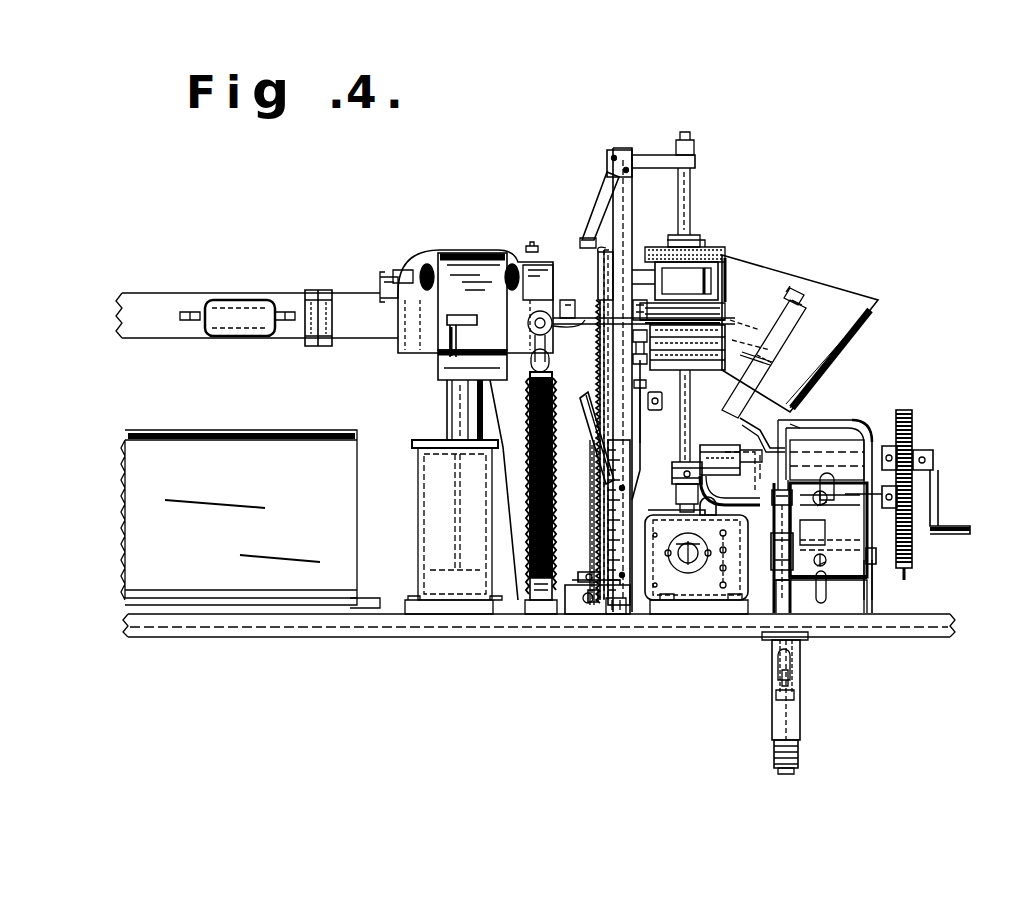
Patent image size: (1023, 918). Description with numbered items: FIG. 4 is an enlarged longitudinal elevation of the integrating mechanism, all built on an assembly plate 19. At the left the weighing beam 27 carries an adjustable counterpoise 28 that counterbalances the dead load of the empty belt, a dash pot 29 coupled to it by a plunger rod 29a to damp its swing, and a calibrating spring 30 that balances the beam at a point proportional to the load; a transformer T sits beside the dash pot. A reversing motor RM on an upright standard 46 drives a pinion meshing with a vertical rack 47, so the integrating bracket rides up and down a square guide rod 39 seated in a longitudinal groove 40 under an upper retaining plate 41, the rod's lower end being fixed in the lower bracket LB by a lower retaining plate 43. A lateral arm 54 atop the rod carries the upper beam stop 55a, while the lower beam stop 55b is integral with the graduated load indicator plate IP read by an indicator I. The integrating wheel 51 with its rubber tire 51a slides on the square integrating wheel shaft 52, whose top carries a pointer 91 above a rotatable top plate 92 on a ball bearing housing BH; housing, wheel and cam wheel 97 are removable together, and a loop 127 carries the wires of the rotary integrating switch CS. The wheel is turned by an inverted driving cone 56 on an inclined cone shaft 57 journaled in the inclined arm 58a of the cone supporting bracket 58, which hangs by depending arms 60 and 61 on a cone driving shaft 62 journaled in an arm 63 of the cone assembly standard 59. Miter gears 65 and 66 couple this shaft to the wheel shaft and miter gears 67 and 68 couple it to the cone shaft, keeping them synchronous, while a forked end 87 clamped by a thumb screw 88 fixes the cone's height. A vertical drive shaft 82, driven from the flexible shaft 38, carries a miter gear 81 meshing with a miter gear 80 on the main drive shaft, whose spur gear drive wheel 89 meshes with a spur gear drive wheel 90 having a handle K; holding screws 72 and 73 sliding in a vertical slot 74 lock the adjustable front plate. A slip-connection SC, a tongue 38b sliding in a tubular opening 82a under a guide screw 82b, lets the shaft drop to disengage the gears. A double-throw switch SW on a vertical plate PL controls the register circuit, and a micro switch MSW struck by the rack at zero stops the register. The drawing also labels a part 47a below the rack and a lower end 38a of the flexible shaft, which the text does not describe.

The assembly plate 19 is at (430, 638).
The beam 27 is at (150, 294).
The counterpoise 28 is at (240, 305).
The reversing motor RM is at (462, 250).
The upright standard 46 is at (462, 420).
The plunger rod 29a is at (448, 392).
The dash pot 29 is at (424, 500).
The transformer T is at (210, 468).
The calibrating spring 30 is at (555, 495).
The guide rod 39 is at (628, 212).
The longitudinal groove 40 is at (610, 266).
The upper retaining plate 41 is at (596, 272).
The lateral arm 54 is at (646, 150).
The upper beam stop 55a is at (600, 216).
The pointer 91 is at (700, 247).
The top plate 92 is at (718, 272).
The ball bearing housing BH is at (690, 300).
The integrating wheel 51 is at (705, 314).
The rubber tire 51a is at (775, 312).
The cam wheel 97 is at (756, 329).
The rotary integrating switch CS is at (696, 335).
The driving cone 56 is at (830, 296).
The cone shaft 57 is at (800, 376).
The integrating wheel shaft 52 is at (690, 420).
The loop 127 is at (662, 400).
The miter gear 65 is at (680, 462).
The miter gear 66 is at (676, 470).
The cone driving shaft 62 is at (750, 455).
The arm 63 is at (728, 498).
The miter gear 68 is at (780, 424).
The inclined arm 58a is at (795, 421).
The miter gear 67 is at (862, 432).
The cone supporting bracket 58 is at (900, 410).
The depending arm 60 is at (881, 419).
The depending arm 61 is at (898, 453).
The spur gear drive wheel 90 is at (913, 420).
The handle K is at (950, 525).
The spur gear drive wheel 89 is at (913, 548).
The thumb screw 88 is at (876, 556).
The forked end 87 is at (868, 568).
The holding screw 72 is at (828, 498).
The miter gear 80 is at (806, 532).
The holding screw 73 is at (826, 580).
The cone assembly standard 59 is at (876, 611).
The vertical slot 74 is at (822, 594).
The vertical drive shaft 82 is at (772, 516).
The miter gear 81 is at (770, 548).
The double-throw switch SW is at (697, 564).
The vertical plate PL is at (740, 575).
The lower bracket LB is at (680, 498).
The rack 47 is at (606, 530).
The lower retaining plate 43 is at (606, 566).
The lower beam stop 55b is at (600, 410).
The indicator I is at (636, 446).
The micro switch MSW is at (612, 618).
The scale mount 47a is at (588, 586).
The load indicator plate IP is at (618, 602).
The flexible shaft 38 is at (792, 702).
The threaded end 38a is at (800, 744).
The tongue 38b is at (800, 663).
The tubular opening 82a is at (780, 652).
The guide screw 82b is at (778, 674).
The slip-connection SC is at (767, 697).